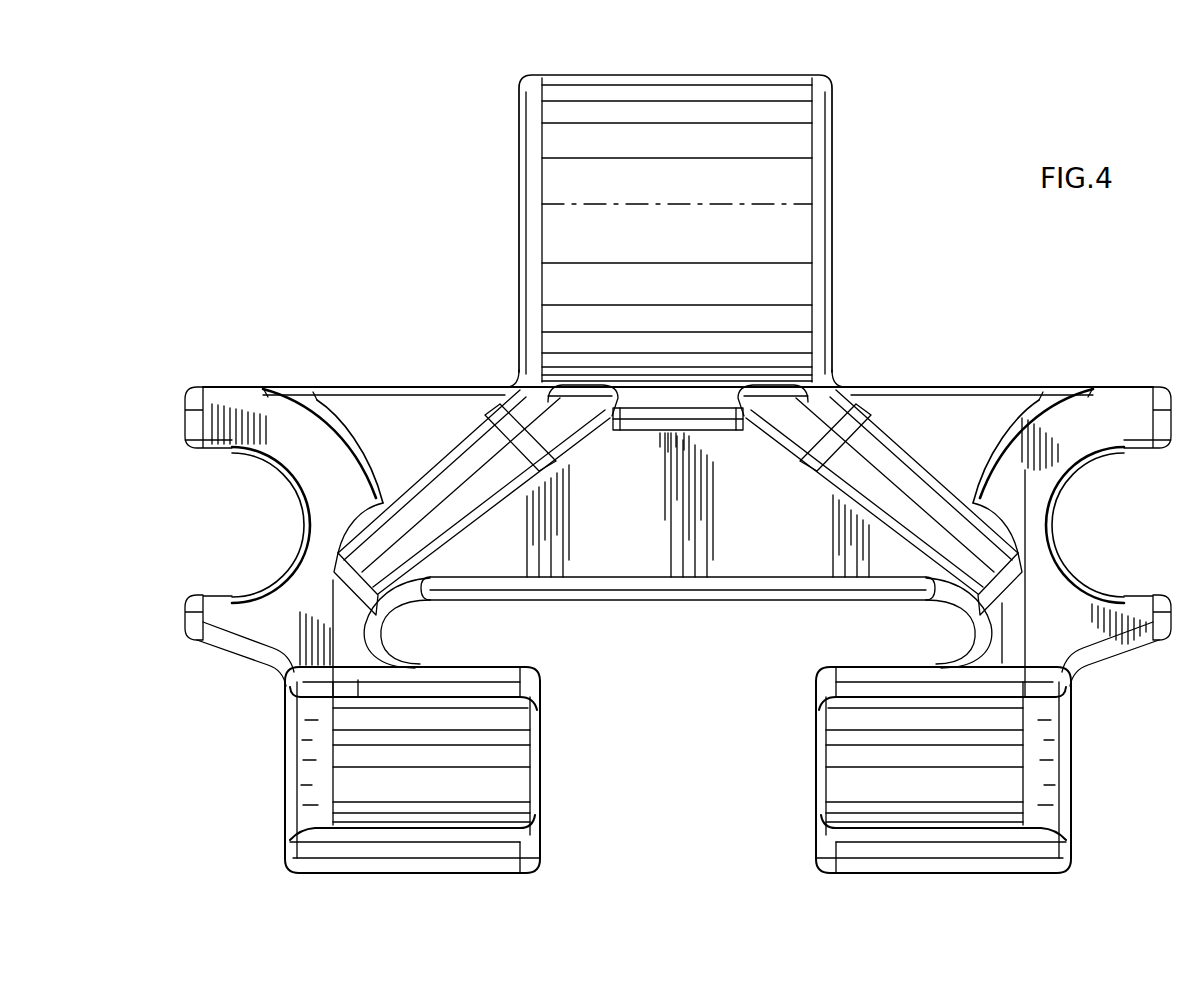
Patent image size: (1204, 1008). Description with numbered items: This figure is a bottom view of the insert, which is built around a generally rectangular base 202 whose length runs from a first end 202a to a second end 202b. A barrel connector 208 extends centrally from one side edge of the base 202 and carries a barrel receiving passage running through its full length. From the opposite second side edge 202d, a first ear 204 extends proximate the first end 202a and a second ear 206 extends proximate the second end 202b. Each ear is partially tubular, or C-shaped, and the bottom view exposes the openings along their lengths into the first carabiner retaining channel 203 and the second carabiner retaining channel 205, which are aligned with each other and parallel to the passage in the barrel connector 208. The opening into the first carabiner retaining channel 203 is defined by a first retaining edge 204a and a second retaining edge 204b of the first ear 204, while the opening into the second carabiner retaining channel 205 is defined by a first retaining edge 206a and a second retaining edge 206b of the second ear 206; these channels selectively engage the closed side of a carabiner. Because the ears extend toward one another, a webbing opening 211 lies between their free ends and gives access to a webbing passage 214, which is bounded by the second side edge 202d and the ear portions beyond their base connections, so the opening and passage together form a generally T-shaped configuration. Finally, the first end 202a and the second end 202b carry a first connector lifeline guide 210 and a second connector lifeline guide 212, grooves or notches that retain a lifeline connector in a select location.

The base 202 is at (760, 478).
The first end of the base 202a is at (1097, 620).
The second end of the base 202b is at (232, 423).
The second side edge 202d is at (632, 597).
The first carabiner retaining channel 203 is at (1000, 757).
The first ear 204 is at (1027, 860).
The first retaining edge 204a is at (870, 835).
The second retaining edge 204b is at (848, 703).
The second carabiner retaining channel 205 is at (515, 770).
The second ear 206 is at (527, 863).
The first retaining edge 206a is at (355, 838).
The second retaining edge 206b is at (510, 708).
The barrel connector 208 is at (787, 153).
The first connector lifeline guide 210 is at (1145, 535).
The webbing opening 211 is at (668, 773).
The second connector lifeline guide 212 is at (238, 545).
The webbing passage 214 is at (740, 617).